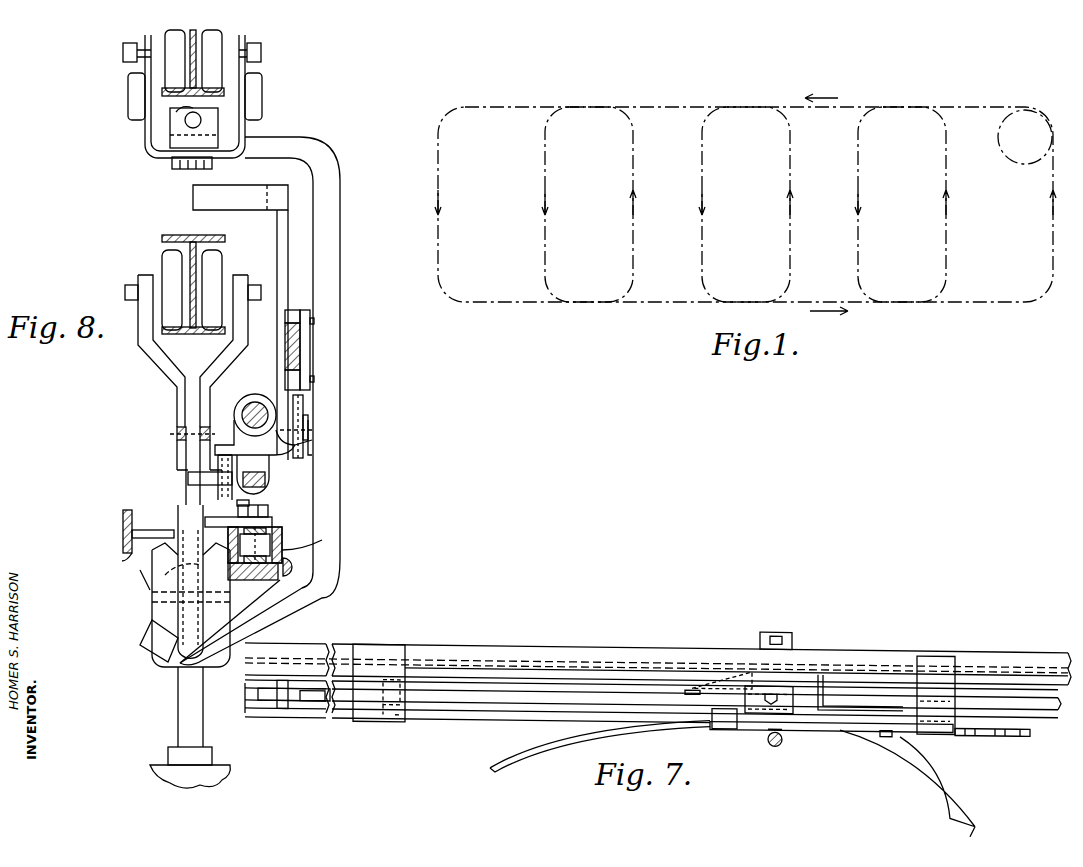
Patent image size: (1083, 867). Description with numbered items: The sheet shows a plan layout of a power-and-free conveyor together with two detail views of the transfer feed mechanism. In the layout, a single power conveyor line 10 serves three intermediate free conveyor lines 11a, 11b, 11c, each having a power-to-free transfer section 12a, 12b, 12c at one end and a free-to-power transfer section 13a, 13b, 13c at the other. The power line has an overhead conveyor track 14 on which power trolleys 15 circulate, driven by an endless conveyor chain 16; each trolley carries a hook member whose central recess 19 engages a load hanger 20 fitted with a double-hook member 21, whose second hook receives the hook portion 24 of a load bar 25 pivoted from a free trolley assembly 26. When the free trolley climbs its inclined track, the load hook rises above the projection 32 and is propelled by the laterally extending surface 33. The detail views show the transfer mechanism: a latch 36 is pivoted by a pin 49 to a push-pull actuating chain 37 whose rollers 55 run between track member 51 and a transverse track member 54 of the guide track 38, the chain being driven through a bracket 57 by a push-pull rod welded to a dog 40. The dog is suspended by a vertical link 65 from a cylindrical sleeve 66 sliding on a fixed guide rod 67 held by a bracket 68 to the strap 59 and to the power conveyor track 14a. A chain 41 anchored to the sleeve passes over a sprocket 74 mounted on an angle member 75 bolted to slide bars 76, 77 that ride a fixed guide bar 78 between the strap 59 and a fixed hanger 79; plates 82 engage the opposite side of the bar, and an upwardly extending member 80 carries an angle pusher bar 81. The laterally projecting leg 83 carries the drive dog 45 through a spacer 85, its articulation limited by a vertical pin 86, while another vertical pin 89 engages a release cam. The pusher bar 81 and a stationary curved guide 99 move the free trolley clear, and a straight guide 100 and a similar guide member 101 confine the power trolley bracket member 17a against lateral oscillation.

In FIG. 1, the power conveyor line 10 is at (998, 304).
In FIG. 1, the intermediate free conveyor line 11a is at (633, 168).
In FIG. 1, the intermediate free conveyor line 11b is at (790, 200).
In FIG. 1, the intermediate free conveyor line 11c is at (948, 202).
In FIG. 1, the power-to-free transfer section 12a is at (586, 107).
In FIG. 1, the power-to-free transfer section 12b is at (738, 105).
In FIG. 1, the power-to-free transfer section 12c is at (908, 105).
In FIG. 1, the free-to-power transfer section 13a is at (586, 304).
In FIG. 1, the free-to-power transfer section 13b is at (656, 255).
In FIG. 1, the free-to-power transfer section 13c is at (908, 306).
In FIG. 8, the overhead conveyor track 14 is at (165, 234).
In FIG. 7, the power conveyor track 14a is at (606, 637).
In FIG. 8, the power trolley 15 is at (154, 373).
In FIG. 7, the power trolley 15 is at (772, 626).
In FIG. 8, the endless conveyor chain 16 is at (176, 425).
In FIG. 8, the power trolley bracket member 17a is at (191, 581).
In FIG. 8, the central recess 19 is at (159, 577).
In FIG. 8, the load hanger 20 is at (206, 771).
In FIG. 8, the double-hook member 21 is at (150, 648).
In FIG. 8, the hook portion 24 is at (181, 678).
In FIG. 8, the load bar 25 is at (340, 439).
In FIG. 7, the load bar 25 is at (775, 743).
In FIG. 8, the free trolley assembly 26 is at (210, 129).
In FIG. 8, the projection 32 is at (152, 565).
In FIG. 8, the laterally extending surface 33 is at (160, 615).
In FIG. 8, the latch 36 is at (234, 509).
In FIG. 8, the push-pull actuating chain 37 is at (290, 590).
In FIG. 8, the guide track 38 is at (310, 552).
In FIG. 7, the guide track 38 is at (923, 792).
In FIG. 8, the dog 40 is at (271, 502).
In FIG. 8, the chain 41 is at (311, 458).
In FIG. 7, the chain 41 is at (1004, 725).
In FIG. 8, the drive dog 45 is at (192, 479).
In FIG. 7, the drive dog 45 is at (696, 675).
In FIG. 8, the pin 49 is at (252, 492).
In FIG. 8, the track member 51 is at (282, 548).
In FIG. 8, the transverse track member 54 is at (250, 580).
In FIG. 8, the rollers 55 is at (282, 533).
In FIG. 7, the bracket 57 is at (283, 706).
In FIG. 7, the strap 59 is at (356, 718).
In FIG. 8, the vertical link 65 is at (275, 477).
In FIG. 8, the cylindrical sleeve 66 is at (254, 394).
In FIG. 7, the cylindrical sleeve 66 is at (748, 675).
In FIG. 8, the fixed guide rod 67 is at (250, 406).
In FIG. 7, the fixed guide rod 67 is at (530, 675).
In FIG. 7, the bracket 68 is at (372, 720).
In FIG. 8, the sprocket 74 is at (304, 408).
In FIG. 8, the angle member 75 is at (286, 455).
In FIG. 8, the slide bar 76 is at (289, 309).
In FIG. 8, the slide bar 77 is at (298, 382).
In FIG. 8, the fixed guide bar 78 is at (300, 345).
In FIG. 7, the fixed guide bar 78 is at (453, 713).
In FIG. 7, the fixed hanger 79 is at (956, 720).
In FIG. 8, the upwardly extending member 80 is at (282, 251).
In FIG. 8, the angle pusher bar 81 is at (244, 202).
In FIG. 7, the angle pusher bar 81 is at (841, 666).
In FIG. 8, the plates 82 is at (310, 320).
In FIG. 7, the plates 82 is at (710, 727).
In FIG. 8, the laterally projecting leg 83 is at (240, 450).
In FIG. 8, the spacer 85 is at (195, 470).
In FIG. 8, the vertical pin 86 is at (215, 490).
In FIG. 8, the vertical pin 89 is at (229, 476).
In FIG. 8, the stationary curved guide 99 is at (300, 567).
In FIG. 7, the stationary curved guide 99 is at (543, 737).
In FIG. 8, the straight guide 100 is at (172, 532).
In FIG. 8, the guide member 101 is at (140, 540).